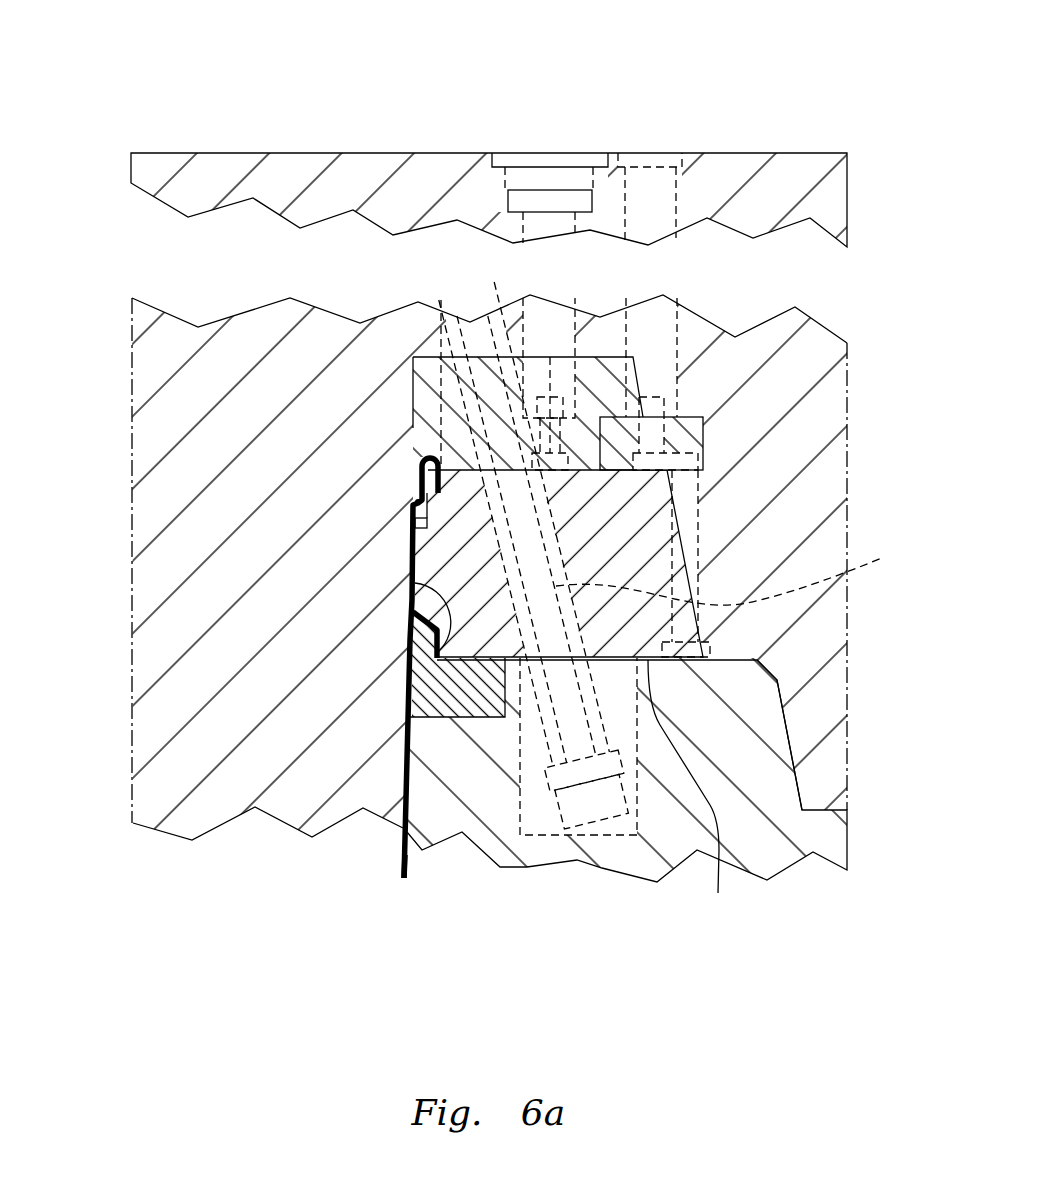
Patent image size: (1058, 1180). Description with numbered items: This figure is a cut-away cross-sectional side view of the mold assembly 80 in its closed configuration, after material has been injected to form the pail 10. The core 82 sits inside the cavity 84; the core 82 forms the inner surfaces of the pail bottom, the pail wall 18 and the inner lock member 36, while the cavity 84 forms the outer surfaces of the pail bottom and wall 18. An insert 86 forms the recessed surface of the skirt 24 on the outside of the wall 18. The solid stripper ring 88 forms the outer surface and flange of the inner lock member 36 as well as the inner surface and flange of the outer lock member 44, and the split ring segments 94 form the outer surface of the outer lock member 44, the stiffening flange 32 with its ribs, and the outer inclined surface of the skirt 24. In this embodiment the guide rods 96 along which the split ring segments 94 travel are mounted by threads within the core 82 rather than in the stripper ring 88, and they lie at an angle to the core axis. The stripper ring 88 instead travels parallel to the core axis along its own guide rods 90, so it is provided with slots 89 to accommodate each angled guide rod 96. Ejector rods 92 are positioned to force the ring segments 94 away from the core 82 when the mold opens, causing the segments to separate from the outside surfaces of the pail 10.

The pail 10 is at (398, 862).
The wall 18 is at (409, 879).
The skirt 24 is at (413, 585).
The stiffening flange 32 is at (411, 532).
The inner lock member 36 is at (418, 500).
The outer lock member 44 is at (417, 487).
The mold assembly 80 is at (547, 90).
The core 82 is at (369, 152).
The cavity 84 is at (622, 872).
The insert 86 is at (440, 718).
The solid stripper ring 88 is at (592, 357).
The slots 89 is at (415, 355).
The guide rods 90 is at (523, 328).
The ejector rods 92 is at (680, 322).
The split ring segments 94 is at (725, 795).
The guide rods 96 is at (737, 568).